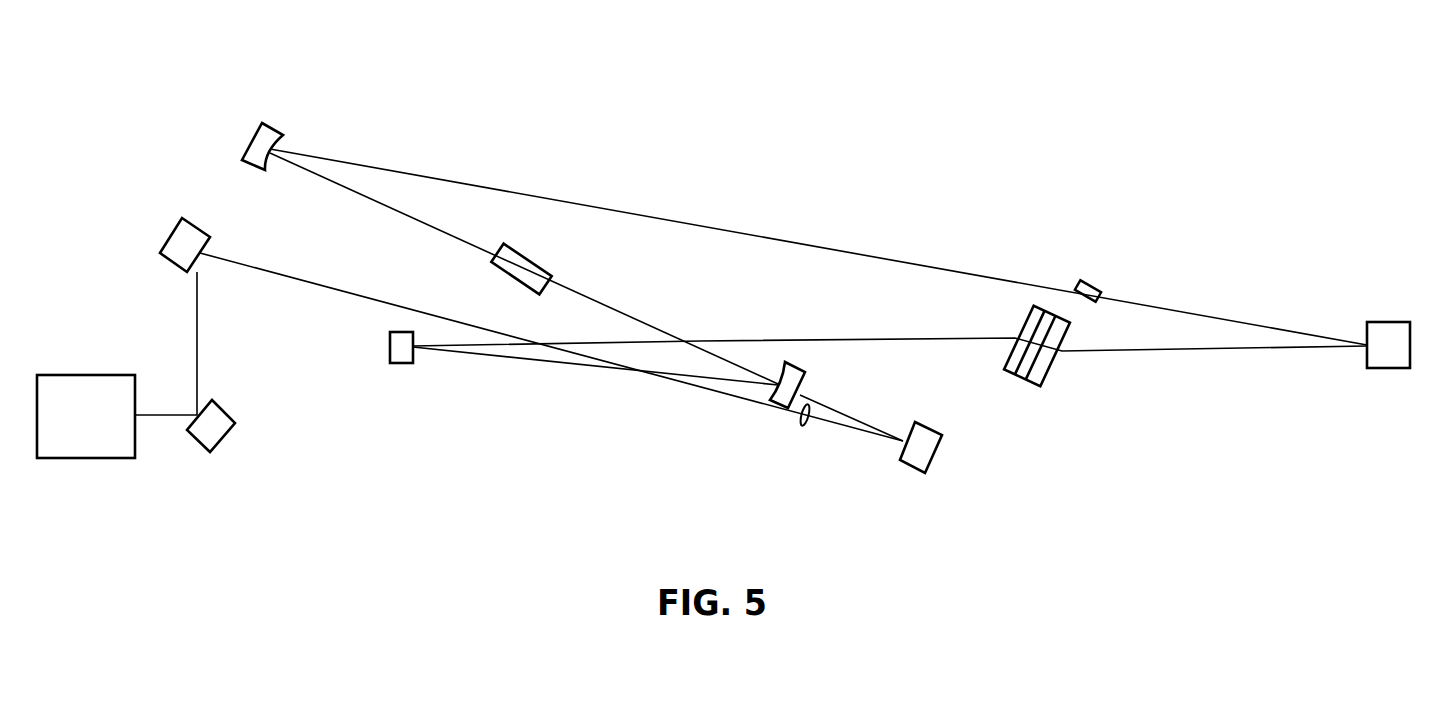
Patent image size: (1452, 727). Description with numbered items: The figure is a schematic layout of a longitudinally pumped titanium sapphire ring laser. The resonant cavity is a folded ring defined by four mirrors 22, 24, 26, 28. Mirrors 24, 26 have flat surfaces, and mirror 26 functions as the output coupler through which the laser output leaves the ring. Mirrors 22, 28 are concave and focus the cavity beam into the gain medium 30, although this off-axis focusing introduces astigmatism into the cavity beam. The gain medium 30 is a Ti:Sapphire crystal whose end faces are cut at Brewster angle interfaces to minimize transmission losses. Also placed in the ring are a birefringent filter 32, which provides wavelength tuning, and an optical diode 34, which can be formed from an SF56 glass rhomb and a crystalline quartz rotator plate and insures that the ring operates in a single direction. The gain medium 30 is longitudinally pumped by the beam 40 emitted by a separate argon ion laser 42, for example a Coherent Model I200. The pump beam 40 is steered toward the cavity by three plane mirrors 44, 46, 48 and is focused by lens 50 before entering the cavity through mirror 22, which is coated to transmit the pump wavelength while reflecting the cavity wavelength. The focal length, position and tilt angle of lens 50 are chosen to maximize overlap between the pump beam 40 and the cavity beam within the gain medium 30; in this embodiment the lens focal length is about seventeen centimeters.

The mirror 22 is at (785, 367).
The mirror 24 is at (402, 363).
The mirror 26 is at (1388, 322).
The mirror 28 is at (266, 124).
The gain medium 30 is at (510, 247).
The birefringent filter 32 is at (1027, 317).
The optical diode 34 is at (1103, 288).
The beam 40 is at (163, 417).
The laser 42 is at (80, 458).
The plane mirror 44 is at (223, 410).
The plane mirror 46 is at (177, 227).
The plane mirror 48 is at (913, 473).
The lens 50 is at (798, 423).